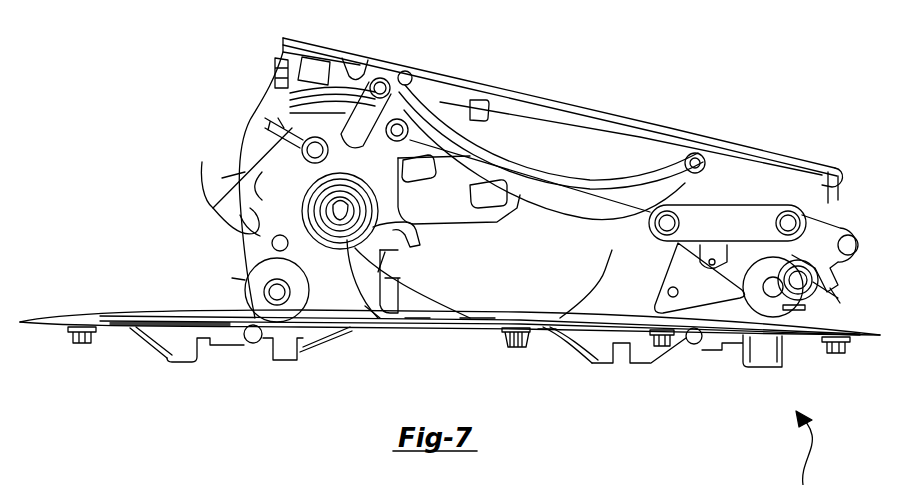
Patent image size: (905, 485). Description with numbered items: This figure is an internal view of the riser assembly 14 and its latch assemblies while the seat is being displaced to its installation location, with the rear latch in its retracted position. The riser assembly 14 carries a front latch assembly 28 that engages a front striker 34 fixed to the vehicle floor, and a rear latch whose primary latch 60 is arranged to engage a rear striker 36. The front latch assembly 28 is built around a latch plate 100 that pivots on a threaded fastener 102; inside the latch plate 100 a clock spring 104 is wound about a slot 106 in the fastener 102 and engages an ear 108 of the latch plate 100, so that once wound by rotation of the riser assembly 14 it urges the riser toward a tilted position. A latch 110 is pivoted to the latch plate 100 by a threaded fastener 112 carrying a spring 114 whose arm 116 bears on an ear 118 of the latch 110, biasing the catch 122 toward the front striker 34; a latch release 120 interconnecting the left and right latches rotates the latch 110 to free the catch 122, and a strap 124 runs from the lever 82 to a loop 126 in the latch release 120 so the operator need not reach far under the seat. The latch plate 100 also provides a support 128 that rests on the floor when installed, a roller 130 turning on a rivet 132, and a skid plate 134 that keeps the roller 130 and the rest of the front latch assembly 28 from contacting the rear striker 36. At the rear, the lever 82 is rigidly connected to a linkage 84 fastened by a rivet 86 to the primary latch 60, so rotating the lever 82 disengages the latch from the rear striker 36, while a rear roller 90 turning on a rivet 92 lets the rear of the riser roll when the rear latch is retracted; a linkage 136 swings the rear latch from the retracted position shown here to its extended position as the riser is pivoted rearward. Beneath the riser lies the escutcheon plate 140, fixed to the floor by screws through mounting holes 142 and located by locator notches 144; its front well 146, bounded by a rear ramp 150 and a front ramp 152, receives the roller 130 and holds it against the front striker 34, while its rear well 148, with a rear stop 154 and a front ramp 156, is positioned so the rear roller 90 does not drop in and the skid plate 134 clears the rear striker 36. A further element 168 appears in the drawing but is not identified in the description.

The riser assembly 14 is at (790, 112).
The front latch assembly 28 is at (276, 393).
The front striker 34 is at (253, 344).
The rear striker 36 is at (695, 345).
The primary latch 60 is at (693, 277).
The lever 82 is at (695, 153).
The linkage 84 is at (753, 200).
The rivet 86 is at (800, 217).
The rear roller 90 is at (785, 334).
The rivet 92 is at (767, 292).
The latch plate 100 is at (232, 254).
The threaded fastener 102 is at (475, 321).
The clock spring 104 is at (365, 306).
The slot 106 is at (332, 205).
The ear 108 is at (418, 248).
The latch 110 is at (232, 230).
The threaded fastener 112 is at (315, 137).
The spring 114 is at (303, 143).
The arm 116 is at (282, 130).
The ear 118 is at (268, 124).
The latch release 120 is at (365, 77).
The catch 122 is at (260, 120).
The strap 124 is at (580, 175).
The loop 126 is at (410, 74).
The support 128 is at (222, 180).
The roller 130 is at (264, 291).
The rivet 132 is at (232, 278).
The skid plate 134 is at (415, 320).
The linkage 136 is at (513, 152).
The escutcheon plate 140 is at (80, 318).
The mounting holes 142 is at (72, 334).
The locator notches 144 is at (200, 352).
The front well 146 is at (150, 348).
The rear well 148 is at (570, 345).
The rear ramp 150 is at (297, 360).
The front ramp 152 is at (159, 320).
The rear stop 154 is at (777, 338).
The front ramp 156 is at (585, 325).
The support 168 is at (415, 476).